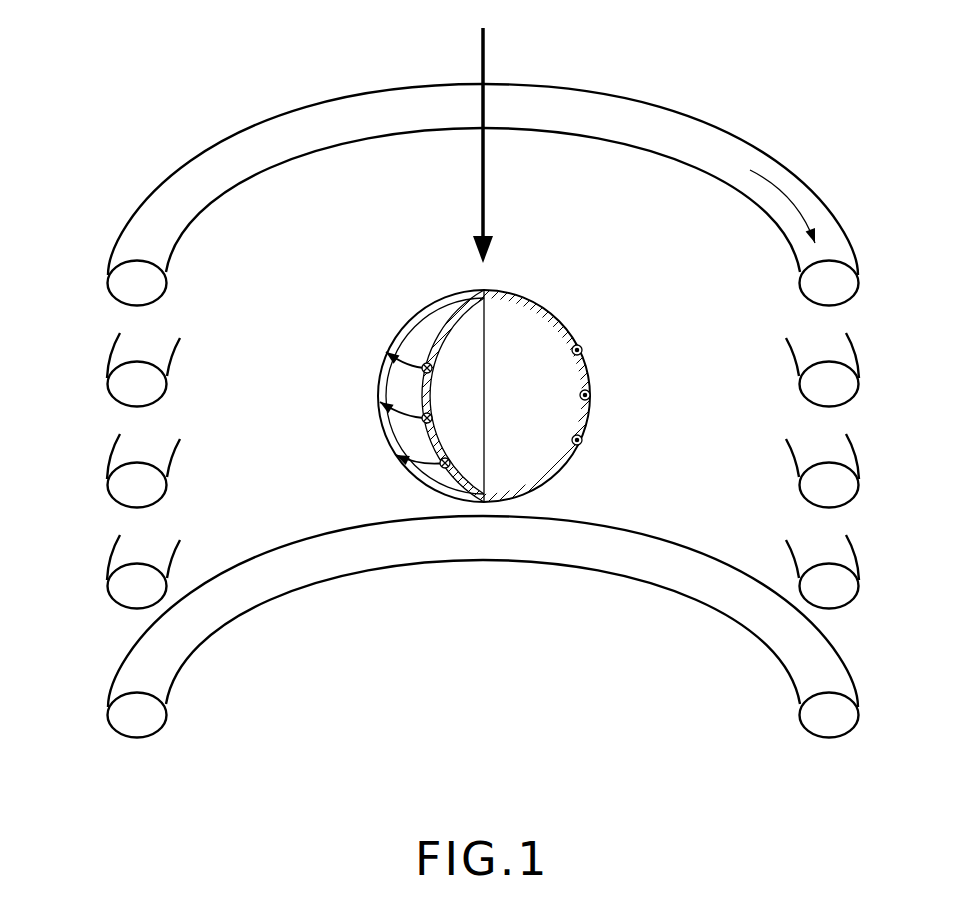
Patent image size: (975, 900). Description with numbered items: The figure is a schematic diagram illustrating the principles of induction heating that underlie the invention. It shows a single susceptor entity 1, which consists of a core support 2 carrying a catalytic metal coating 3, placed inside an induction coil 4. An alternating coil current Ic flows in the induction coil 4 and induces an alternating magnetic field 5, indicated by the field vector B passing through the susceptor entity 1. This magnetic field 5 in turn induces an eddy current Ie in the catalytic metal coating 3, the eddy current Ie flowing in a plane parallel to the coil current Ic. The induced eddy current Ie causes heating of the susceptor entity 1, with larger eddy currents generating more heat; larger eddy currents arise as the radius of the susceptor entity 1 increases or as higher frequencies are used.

The susceptor entity 1 is at (452, 390).
The core support 2 is at (518, 330).
The catalytic metal coating 3 is at (590, 370).
The induction coil 4 is at (108, 350).
The alternating magnetic field 5 is at (482, 155).
The magnetic field B is at (486, 182).
The alternating coil current Ic is at (800, 183).
The eddy current Ie is at (381, 411).